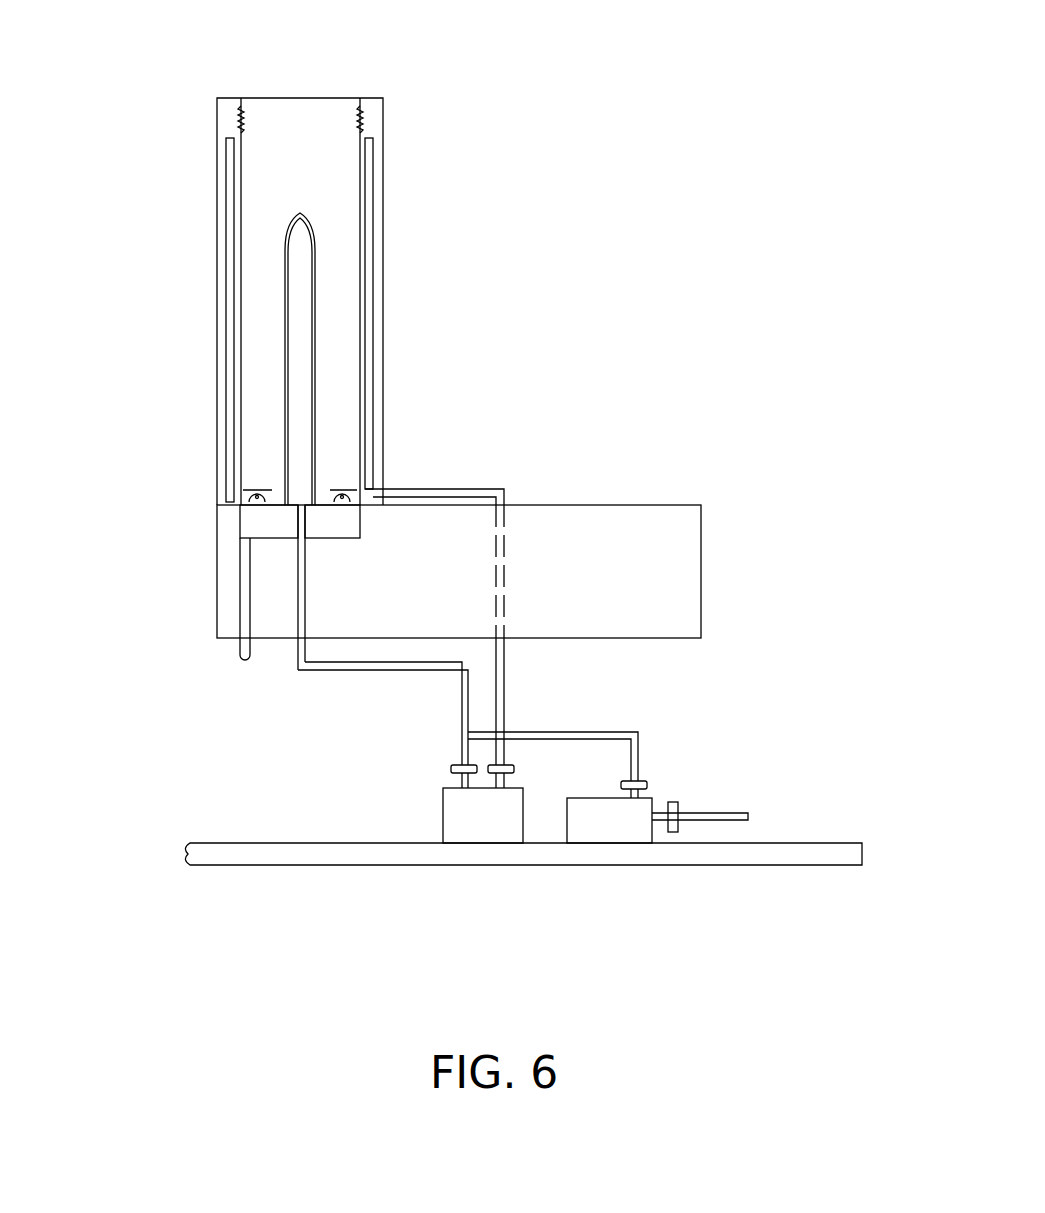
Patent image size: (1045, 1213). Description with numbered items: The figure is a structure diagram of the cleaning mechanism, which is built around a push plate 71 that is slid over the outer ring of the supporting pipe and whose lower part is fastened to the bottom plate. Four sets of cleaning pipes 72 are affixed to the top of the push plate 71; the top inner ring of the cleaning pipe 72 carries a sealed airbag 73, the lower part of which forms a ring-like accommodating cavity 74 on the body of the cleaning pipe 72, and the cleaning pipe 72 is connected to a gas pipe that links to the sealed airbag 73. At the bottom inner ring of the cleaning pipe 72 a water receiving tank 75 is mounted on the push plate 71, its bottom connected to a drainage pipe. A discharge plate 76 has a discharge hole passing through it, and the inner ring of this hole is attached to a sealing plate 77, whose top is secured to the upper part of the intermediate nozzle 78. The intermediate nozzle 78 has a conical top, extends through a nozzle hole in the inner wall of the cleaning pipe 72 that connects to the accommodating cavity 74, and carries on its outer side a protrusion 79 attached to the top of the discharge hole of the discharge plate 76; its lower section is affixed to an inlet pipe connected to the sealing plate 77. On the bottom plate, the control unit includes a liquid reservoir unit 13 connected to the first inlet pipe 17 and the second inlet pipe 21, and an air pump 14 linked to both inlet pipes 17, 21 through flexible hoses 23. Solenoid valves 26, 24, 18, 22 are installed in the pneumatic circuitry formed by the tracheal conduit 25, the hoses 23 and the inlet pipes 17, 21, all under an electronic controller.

The liquid reservoir unit 13 is at (480, 815).
The air pump 14 is at (612, 823).
The first inlet pipe 17 is at (397, 665).
The solenoid valve 18 is at (449, 773).
The second inlet pipe 21 is at (408, 488).
The solenoid valve 22 is at (483, 773).
The flexible hose 23 is at (599, 732).
The solenoid valve 24 is at (646, 782).
The tracheal conduit 25 is at (707, 822).
The solenoid valve 26 is at (678, 800).
The push plate 71 is at (537, 505).
The cleaning pipe 72 is at (217, 275).
The sealed airbag 73 is at (240, 115).
The accommodating cavity 74 is at (226, 388).
The water receiving tank 75 is at (267, 541).
The discharge plate 76 is at (252, 513).
The sealing plate 77 is at (307, 508).
The intermediate nozzle 78 is at (318, 330).
The protrusion 79 is at (343, 490).